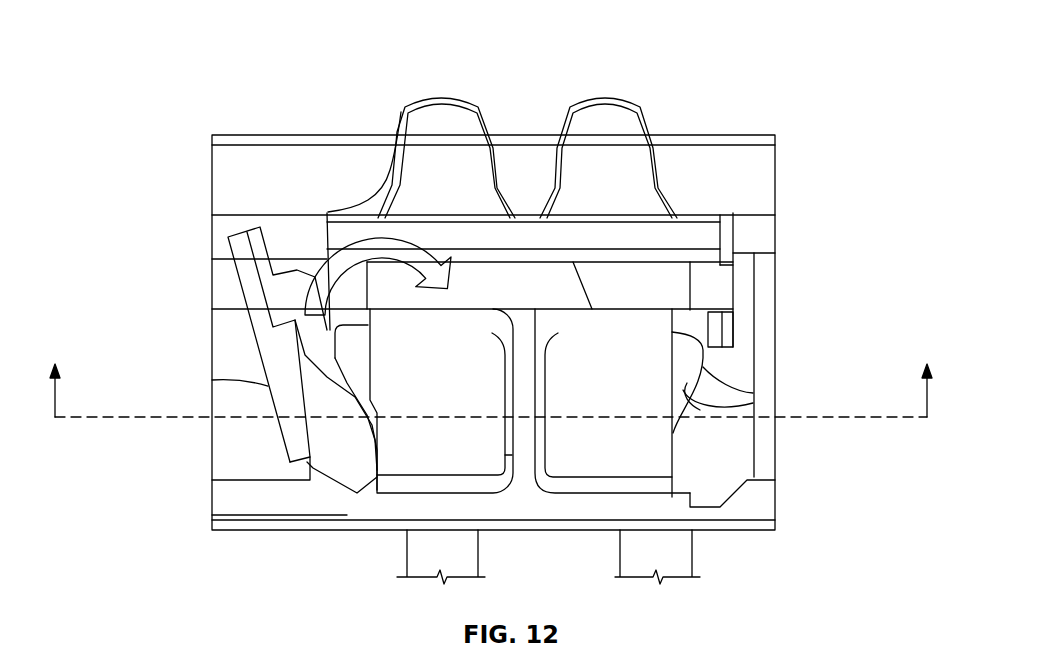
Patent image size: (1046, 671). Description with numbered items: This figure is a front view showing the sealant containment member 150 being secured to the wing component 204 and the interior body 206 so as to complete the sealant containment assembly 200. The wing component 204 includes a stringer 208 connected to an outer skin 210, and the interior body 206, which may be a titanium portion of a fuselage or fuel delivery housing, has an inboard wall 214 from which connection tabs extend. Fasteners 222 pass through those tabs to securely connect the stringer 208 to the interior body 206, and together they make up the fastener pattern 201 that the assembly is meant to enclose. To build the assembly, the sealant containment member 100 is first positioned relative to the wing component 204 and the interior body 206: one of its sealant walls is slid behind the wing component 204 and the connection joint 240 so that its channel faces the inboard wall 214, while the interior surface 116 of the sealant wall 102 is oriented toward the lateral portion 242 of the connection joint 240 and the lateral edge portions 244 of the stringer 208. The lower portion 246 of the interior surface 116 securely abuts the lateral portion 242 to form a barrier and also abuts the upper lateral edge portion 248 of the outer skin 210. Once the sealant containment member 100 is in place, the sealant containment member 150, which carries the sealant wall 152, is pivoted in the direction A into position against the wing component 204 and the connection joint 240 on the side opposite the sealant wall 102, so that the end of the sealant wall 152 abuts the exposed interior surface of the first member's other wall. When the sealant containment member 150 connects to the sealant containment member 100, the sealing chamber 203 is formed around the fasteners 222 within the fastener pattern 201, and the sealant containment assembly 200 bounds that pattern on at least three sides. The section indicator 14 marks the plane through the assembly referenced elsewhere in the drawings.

The fastener pattern 201 is at (600, 60).
The interior body 206 is at (233, 134).
The fastener 222 is at (450, 97).
The stringer 208 is at (527, 250).
The sealing chamber 203 is at (465, 287).
The rotation direction A is at (325, 275).
The lateral edge portions 244 is at (694, 278).
The lateral portion 242 is at (702, 318).
The sealant containment assembly 200 is at (757, 281).
The sealant containment member 100 is at (745, 378).
The sealant wall 102 is at (748, 393).
The interior surface 116 is at (748, 405).
The sealant containment member 150 is at (293, 330).
The sealant wall 152 is at (238, 284).
The inboard wall 214 is at (240, 350).
The connection joint 240 is at (413, 450).
The outer skin 210 is at (590, 530).
The upper lateral edge portion 248 is at (680, 494).
The lower portion 246 is at (673, 447).
The wing component 204 is at (541, 530).
The section line 14- 14 is at (496, 376).